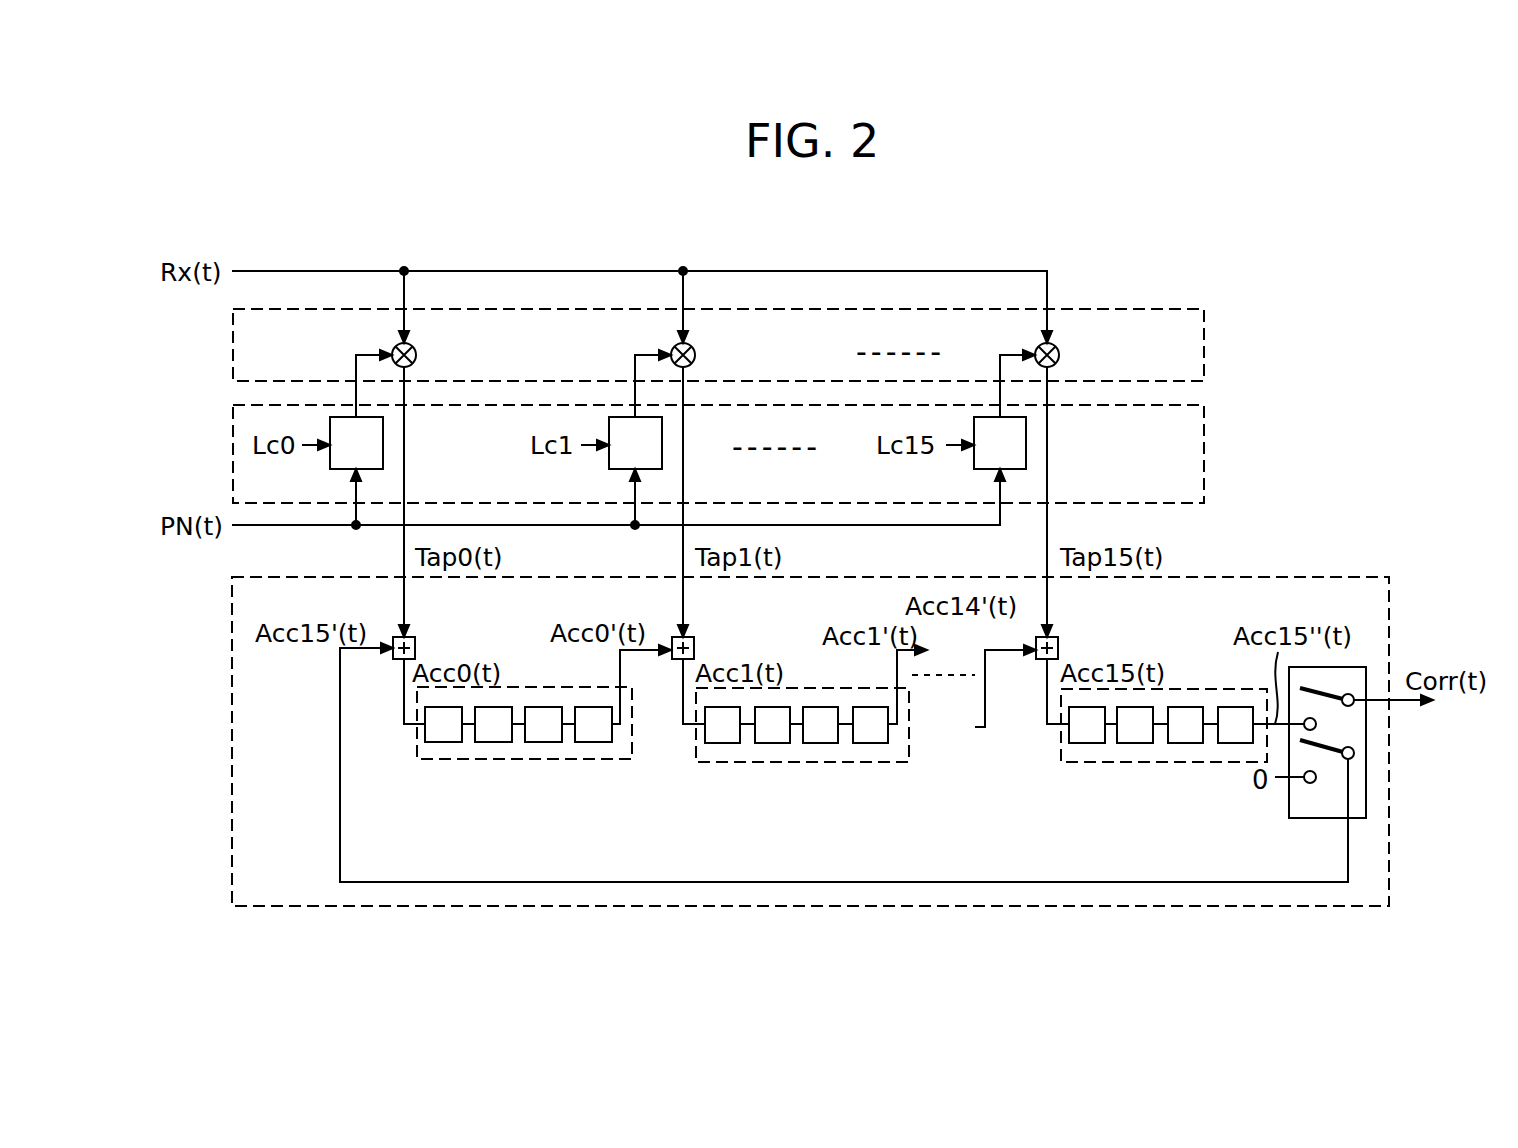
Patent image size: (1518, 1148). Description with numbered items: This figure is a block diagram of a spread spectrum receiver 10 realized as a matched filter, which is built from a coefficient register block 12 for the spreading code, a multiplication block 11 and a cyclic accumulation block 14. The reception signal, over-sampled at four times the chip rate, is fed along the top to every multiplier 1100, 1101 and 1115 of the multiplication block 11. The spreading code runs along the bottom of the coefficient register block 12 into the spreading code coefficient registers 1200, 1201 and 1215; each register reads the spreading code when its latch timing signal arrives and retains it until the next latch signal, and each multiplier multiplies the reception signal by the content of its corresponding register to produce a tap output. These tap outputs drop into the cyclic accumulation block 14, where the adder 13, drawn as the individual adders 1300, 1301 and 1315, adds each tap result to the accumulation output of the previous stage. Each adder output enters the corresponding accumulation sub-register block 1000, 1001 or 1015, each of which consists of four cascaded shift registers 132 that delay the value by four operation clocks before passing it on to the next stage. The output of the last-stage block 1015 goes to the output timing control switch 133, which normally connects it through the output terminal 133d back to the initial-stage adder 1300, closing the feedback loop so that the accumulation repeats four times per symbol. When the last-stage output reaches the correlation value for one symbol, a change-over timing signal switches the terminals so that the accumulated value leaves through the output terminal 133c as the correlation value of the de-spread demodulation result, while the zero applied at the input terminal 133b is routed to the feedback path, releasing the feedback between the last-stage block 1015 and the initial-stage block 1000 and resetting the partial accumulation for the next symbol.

The spread spectrum receiver 10 is at (950, 824).
The multiplication block 11 is at (1204, 340).
The coefficient register block 12 is at (1204, 443).
The adder 13 is at (873, 619).
The cyclic accumulation block 14 is at (1285, 577).
The multiplier 1100 is at (416, 351).
The multiplier 1101 is at (695, 351).
The multiplier 1115 is at (1059, 351).
The spreading code coefficient register 1200 is at (383, 445).
The spreading code coefficient register 1201 is at (609, 462).
The spreading code coefficient register 1215 is at (974, 464).
The adder 1300 is at (413, 637).
The adder 1301 is at (692, 637).
The adder 1315 is at (1056, 637).
The accumulation sub-register block 1000 is at (613, 760).
The accumulation sub-register block 1001 is at (767, 762).
The accumulation sub-register block 1015 is at (1095, 762).
The shift register 132 is at (443, 742).
The output timing control switch 133 is at (1289, 808).
The input terminal 133b is at (1312, 783).
The output terminal 133c is at (1352, 695).
The output terminal 133d is at (1354, 753).